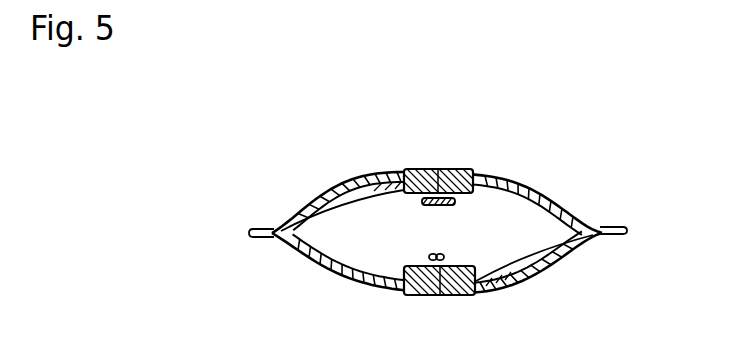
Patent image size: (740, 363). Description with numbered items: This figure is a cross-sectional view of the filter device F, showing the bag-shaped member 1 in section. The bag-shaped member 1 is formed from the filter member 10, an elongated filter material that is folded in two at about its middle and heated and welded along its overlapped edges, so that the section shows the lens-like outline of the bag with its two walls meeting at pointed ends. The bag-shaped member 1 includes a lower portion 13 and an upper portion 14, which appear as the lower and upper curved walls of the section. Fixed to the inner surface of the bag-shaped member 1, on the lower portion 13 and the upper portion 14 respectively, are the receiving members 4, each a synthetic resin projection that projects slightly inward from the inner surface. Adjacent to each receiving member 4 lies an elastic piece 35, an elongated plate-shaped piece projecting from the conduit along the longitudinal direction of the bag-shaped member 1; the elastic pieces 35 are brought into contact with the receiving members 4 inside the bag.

The bag-shaped member 1 is at (442, 223).
The receiving member 4 is at (437, 171).
The filter member 10 is at (442, 223).
The lower portion 13 is at (505, 289).
The upper portion 14 is at (517, 177).
The elastic piece 35 is at (428, 206).
The filter device F is at (556, 180).